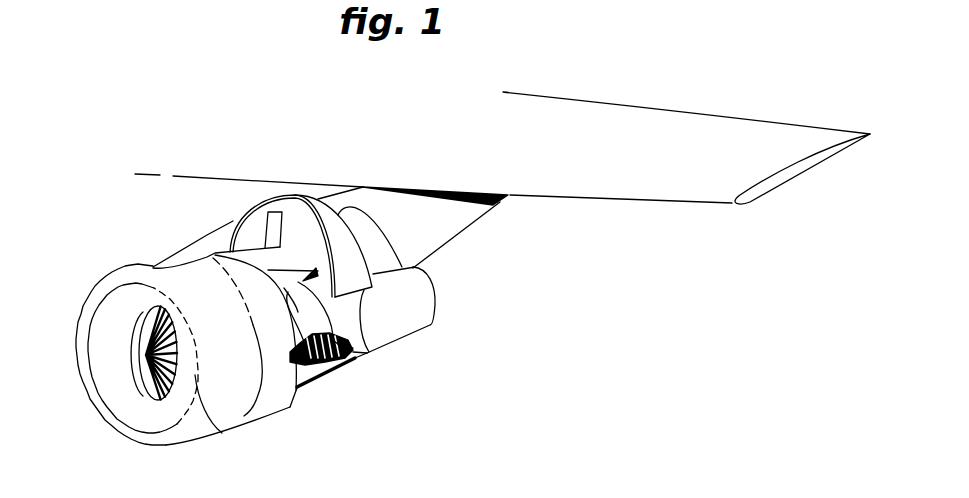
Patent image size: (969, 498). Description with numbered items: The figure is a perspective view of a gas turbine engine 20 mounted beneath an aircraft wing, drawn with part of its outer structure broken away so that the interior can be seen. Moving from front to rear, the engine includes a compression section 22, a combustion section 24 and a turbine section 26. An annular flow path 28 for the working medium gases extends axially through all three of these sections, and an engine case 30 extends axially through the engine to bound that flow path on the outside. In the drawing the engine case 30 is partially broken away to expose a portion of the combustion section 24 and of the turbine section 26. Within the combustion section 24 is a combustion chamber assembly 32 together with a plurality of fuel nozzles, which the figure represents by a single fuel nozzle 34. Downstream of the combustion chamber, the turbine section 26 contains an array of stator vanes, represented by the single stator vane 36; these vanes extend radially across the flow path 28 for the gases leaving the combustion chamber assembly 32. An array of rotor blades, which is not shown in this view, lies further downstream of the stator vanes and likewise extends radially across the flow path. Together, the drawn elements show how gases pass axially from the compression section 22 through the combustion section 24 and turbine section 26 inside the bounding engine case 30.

The gas turbine engine 20 is at (130, 239).
The compression section 22 is at (292, 413).
The combustion section 24 is at (288, 407).
The turbine section 26 is at (363, 369).
The annular flow path 28 is at (112, 370).
The engine case 30 is at (300, 304).
The combustion chamber assembly 32 is at (340, 342).
The fuel nozzle 34 is at (292, 343).
The stator vane 36 is at (363, 353).